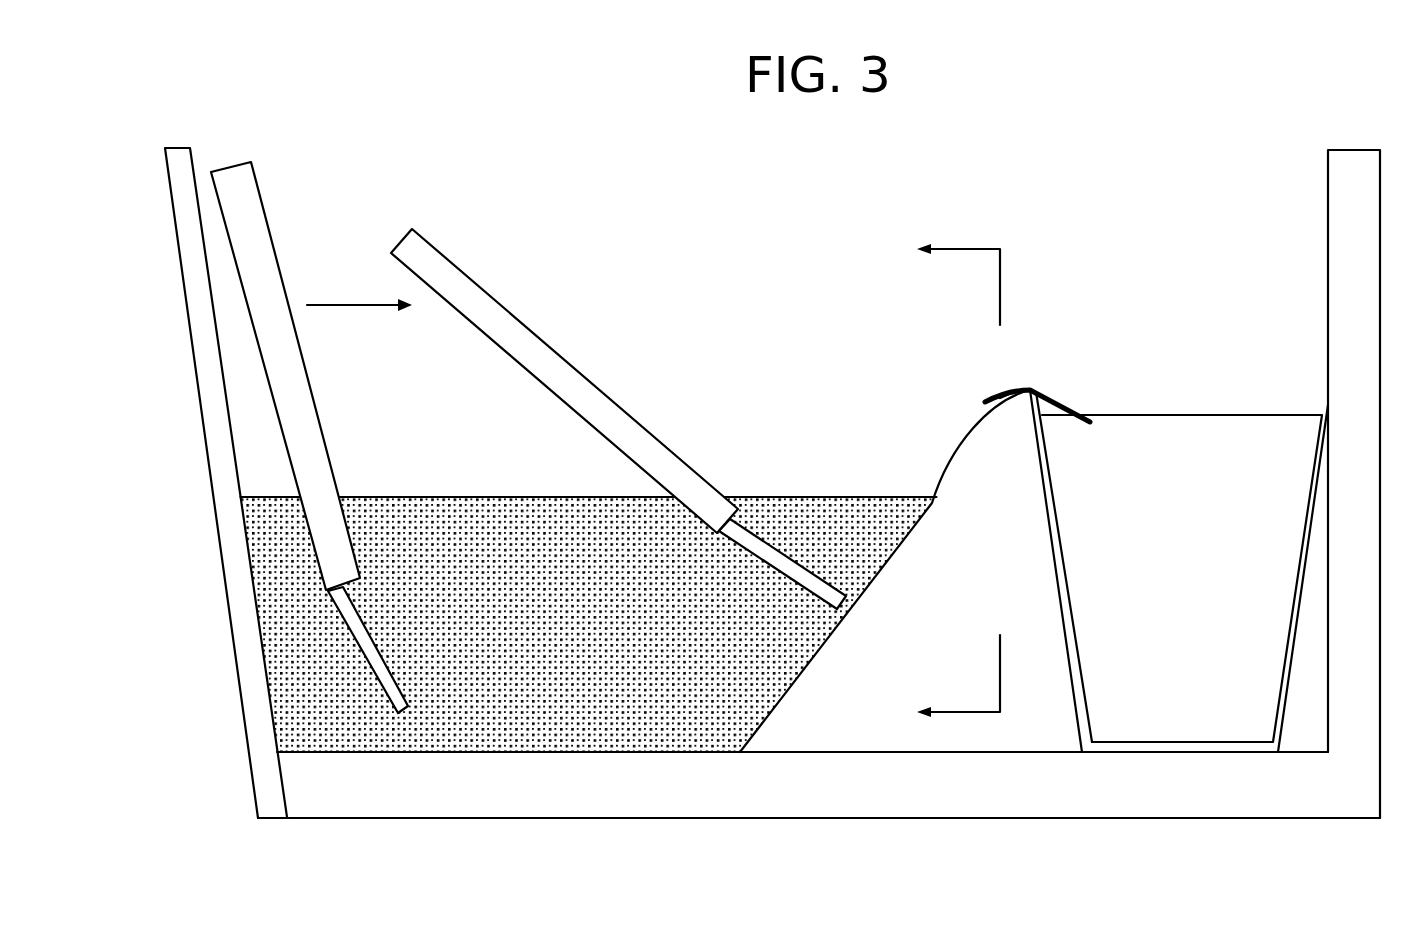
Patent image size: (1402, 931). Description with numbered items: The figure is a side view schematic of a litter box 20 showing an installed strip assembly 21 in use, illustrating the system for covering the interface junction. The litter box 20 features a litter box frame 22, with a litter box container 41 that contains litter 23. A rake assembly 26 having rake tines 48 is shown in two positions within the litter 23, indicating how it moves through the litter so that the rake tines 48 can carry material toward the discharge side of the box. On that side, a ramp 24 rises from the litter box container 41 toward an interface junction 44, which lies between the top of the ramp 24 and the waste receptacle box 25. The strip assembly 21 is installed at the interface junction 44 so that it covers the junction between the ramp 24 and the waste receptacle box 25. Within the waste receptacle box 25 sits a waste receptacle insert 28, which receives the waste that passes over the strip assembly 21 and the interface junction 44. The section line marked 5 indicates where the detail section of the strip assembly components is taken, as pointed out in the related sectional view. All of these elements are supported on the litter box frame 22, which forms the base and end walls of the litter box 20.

The litter box 20 is at (1064, 173).
The strip assembly 21 is at (1012, 388).
The litter box frame 22 is at (1000, 805).
The litter 23 is at (437, 497).
The ramp 24 is at (942, 480).
The waste receptacle box 25 is at (1046, 508).
The rake assembly 26 is at (545, 437).
The waste receptacle insert 28 is at (1155, 543).
The litter box container 41 is at (588, 752).
The interface junction 44 is at (1016, 394).
The rake tines 48 is at (812, 586).
The section line 5 is at (948, 482).